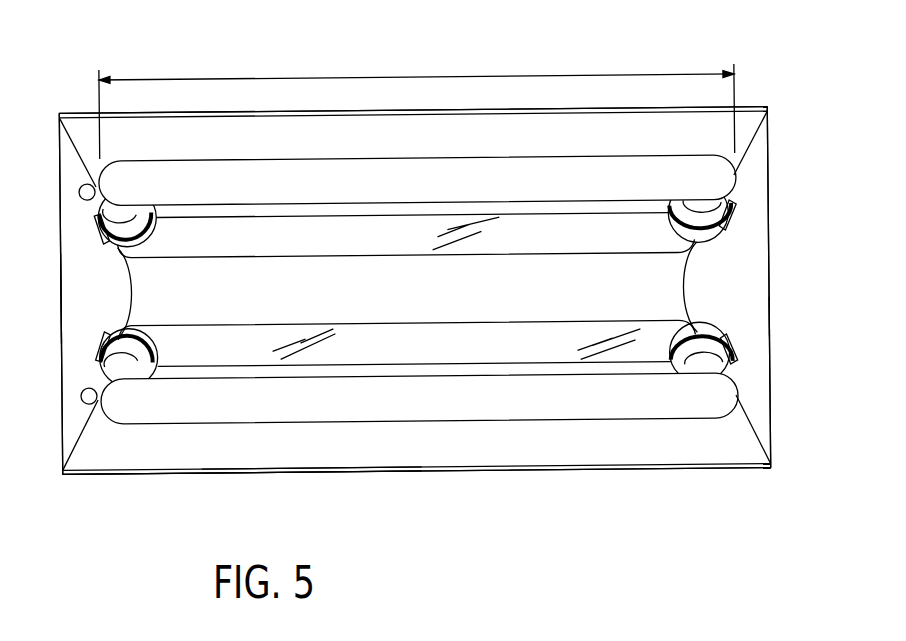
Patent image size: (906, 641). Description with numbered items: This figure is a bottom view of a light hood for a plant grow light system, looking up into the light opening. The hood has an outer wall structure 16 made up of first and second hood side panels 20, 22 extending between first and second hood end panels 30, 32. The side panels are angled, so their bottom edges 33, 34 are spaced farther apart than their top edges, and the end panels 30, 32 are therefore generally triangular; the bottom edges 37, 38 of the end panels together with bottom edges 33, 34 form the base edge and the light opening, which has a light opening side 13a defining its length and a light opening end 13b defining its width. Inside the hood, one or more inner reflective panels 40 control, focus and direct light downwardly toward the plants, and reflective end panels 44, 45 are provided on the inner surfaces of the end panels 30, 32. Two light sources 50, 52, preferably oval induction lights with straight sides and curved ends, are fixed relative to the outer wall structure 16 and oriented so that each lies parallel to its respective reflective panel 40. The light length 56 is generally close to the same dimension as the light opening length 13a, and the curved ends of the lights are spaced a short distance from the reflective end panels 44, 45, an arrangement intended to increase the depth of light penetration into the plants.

The light opening side 13a is at (306, 472).
The light opening end 13b is at (61, 269).
The outer wall structure 16 is at (573, 474).
The first hood side panel 20 is at (480, 111).
The second hood side panel 22 is at (490, 472).
The first hood end panel 30 is at (61, 243).
The second hood end panel 32 is at (770, 249).
The bottom edge of first side panel 33 is at (236, 110).
The bottom edge of second side panel 34 is at (165, 474).
The bottom edge of first end panel 37 is at (61, 149).
The bottom edge of second end panel 38 is at (770, 324).
The inner reflective panel 40 is at (225, 447).
The reflective end panel 44 is at (80, 324).
The reflective end panel 45 is at (757, 378).
The light source 50 is at (537, 159).
The light source 52 is at (402, 412).
The length 56 is at (418, 76).